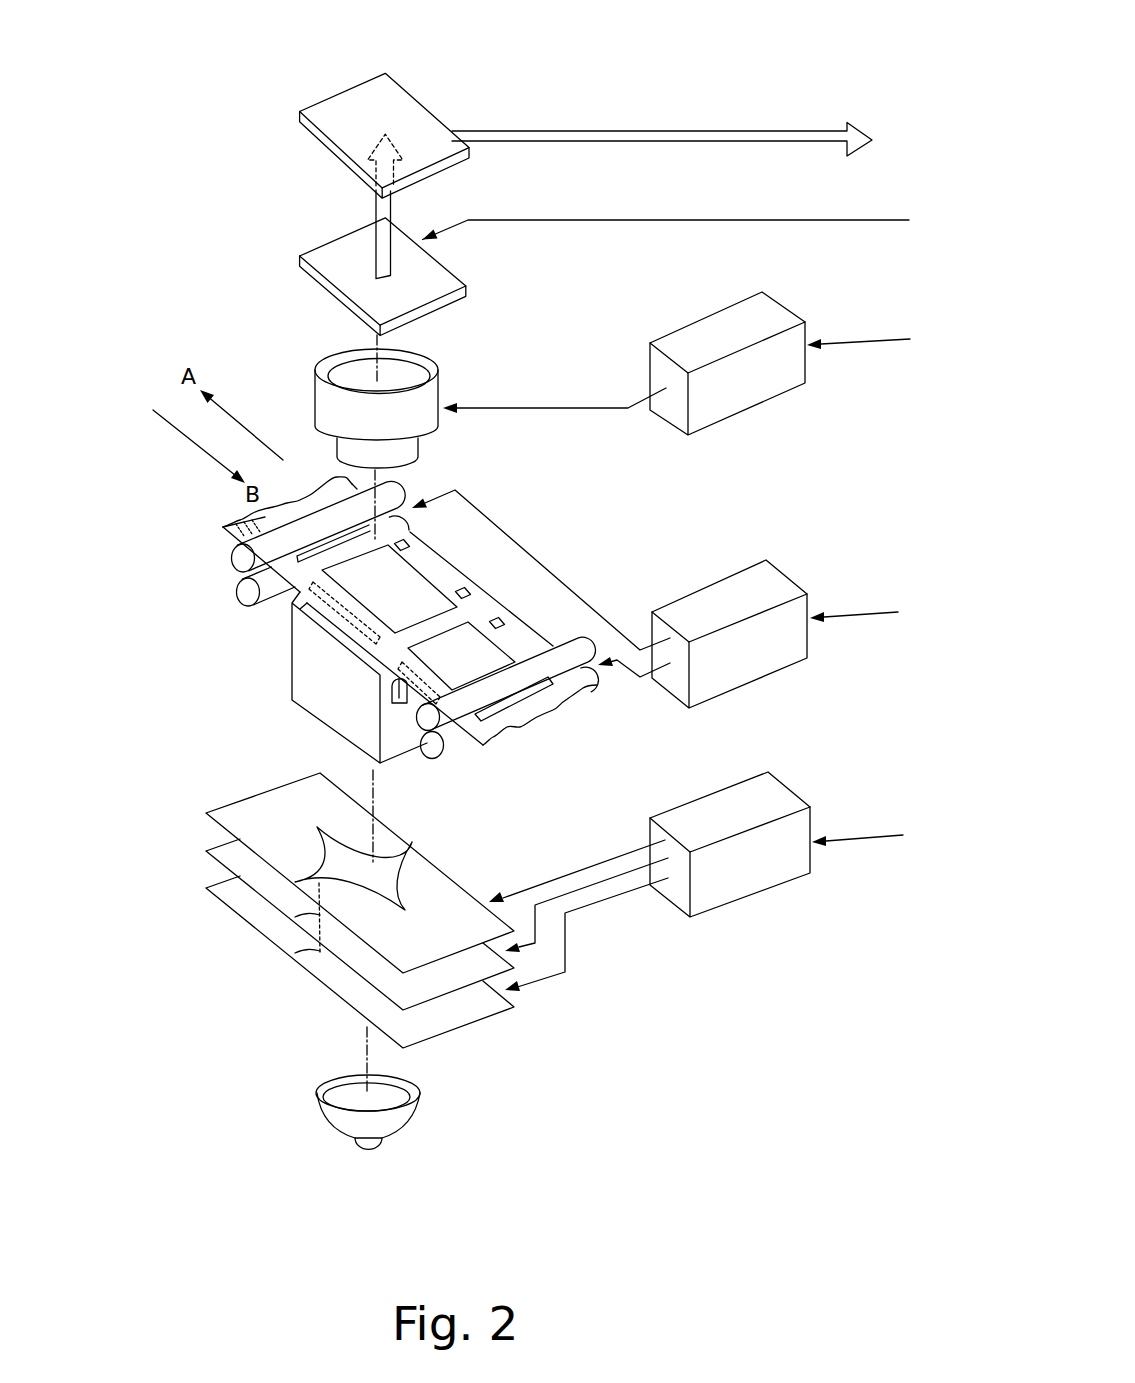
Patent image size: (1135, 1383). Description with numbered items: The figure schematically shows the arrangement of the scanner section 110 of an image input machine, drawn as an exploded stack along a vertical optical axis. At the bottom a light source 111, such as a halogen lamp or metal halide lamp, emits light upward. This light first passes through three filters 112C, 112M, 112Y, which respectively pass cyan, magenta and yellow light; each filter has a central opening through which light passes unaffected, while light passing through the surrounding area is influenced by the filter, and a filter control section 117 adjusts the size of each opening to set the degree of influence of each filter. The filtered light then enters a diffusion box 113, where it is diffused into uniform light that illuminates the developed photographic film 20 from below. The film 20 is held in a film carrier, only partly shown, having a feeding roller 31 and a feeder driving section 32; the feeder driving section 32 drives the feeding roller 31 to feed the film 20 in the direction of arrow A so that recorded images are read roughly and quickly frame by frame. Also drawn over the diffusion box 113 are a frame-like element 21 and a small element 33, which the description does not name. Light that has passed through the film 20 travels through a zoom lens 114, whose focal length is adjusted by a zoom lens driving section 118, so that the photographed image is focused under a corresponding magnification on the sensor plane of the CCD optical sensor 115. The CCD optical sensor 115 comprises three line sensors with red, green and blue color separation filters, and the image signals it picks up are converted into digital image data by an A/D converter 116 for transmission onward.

The scanner section 110 is at (596, 74).
The A/D converter 116 is at (411, 119).
The CCD optical sensor 115 is at (428, 277).
The zoom lens driving section 118 is at (706, 330).
The zoom lens 114 is at (430, 397).
The feeding roller 31 is at (247, 597).
The photographic film 20 is at (287, 592).
The mask frame 21 is at (457, 643).
The feeder driving section 32 is at (720, 597).
The diffusion box 113 is at (312, 698).
The stopper block 33 is at (393, 683).
The yellow filter 112Y is at (230, 820).
The magenta filter 112M is at (225, 855).
The cyan filter 112C is at (223, 892).
The filter control section 117 is at (725, 805).
The light source 111 is at (393, 1120).